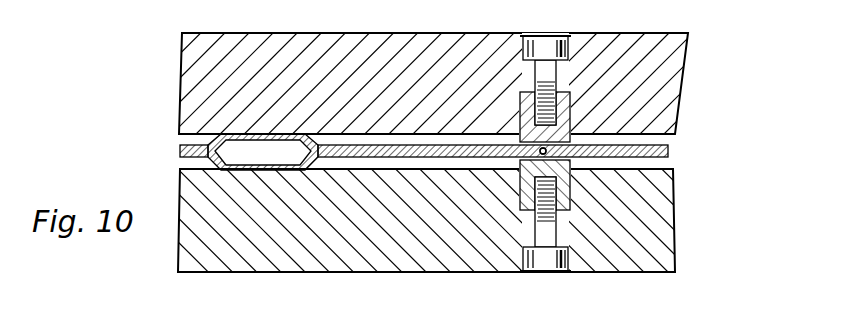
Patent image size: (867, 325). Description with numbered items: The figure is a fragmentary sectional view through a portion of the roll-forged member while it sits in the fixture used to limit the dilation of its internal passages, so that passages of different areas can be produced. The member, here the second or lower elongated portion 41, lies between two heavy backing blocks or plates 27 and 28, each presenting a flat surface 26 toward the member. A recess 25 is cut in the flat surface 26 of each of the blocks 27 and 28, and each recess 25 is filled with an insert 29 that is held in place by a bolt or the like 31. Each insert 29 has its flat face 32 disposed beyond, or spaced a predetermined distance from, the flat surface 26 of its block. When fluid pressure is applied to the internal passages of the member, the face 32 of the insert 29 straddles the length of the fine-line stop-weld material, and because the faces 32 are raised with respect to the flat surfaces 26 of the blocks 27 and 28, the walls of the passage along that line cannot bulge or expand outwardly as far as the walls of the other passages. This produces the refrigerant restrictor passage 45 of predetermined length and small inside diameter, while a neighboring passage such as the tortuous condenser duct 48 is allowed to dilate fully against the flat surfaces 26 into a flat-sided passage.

The recess 25 is at (573, 95).
The flat surface 26 is at (397, 133).
The block or heavy plate 27 is at (665, 101).
The block or heavy plate 28 is at (662, 247).
The insert 29 is at (522, 104).
The bolt 31 is at (544, 62).
The flat face 32 is at (530, 132).
The second or lower elongated portion of the roll-forged member 41 is at (190, 143).
The refrigerant restrictor passage 45 is at (566, 183).
The tortuous passage (condenser duct) 48 is at (212, 157).